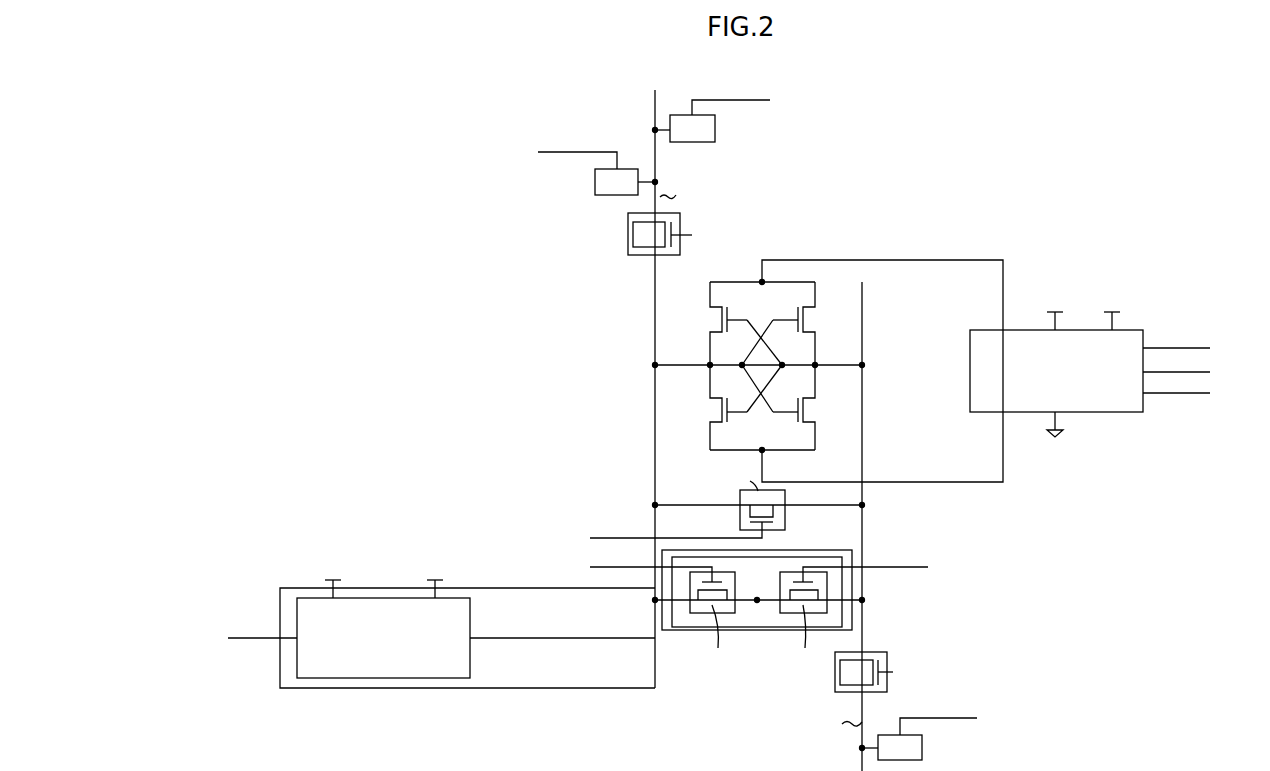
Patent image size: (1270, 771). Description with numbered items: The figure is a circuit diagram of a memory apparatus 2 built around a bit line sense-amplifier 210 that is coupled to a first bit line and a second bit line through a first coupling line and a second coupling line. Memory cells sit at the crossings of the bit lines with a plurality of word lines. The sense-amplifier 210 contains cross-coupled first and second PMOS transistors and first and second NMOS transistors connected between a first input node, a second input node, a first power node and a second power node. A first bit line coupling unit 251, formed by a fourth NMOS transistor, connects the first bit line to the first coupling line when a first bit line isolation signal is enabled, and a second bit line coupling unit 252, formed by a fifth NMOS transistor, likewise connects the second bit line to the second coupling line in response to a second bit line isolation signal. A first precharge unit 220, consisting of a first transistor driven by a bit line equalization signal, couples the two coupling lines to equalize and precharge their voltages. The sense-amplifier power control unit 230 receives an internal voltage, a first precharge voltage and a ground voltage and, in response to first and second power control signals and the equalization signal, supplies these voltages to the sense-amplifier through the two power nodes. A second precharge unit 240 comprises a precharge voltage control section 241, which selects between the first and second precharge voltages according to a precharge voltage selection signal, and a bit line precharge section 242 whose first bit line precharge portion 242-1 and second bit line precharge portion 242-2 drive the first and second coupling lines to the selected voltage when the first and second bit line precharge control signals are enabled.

The memory apparatus 2 is at (466, 226).
The bit line sense-amplifier 210 is at (805, 281).
The first precharge unit 220 is at (788, 516).
The sense-amplifier power control unit 230 is at (1143, 331).
The second precharge unit 240 is at (853, 583).
The precharge voltage control section 241 is at (472, 663).
The bit line precharge section 242 is at (748, 630).
The first bit line precharge portion 242-1 is at (700, 613).
The second bit line precharge portion 242-2 is at (788, 613).
The first bit line coupling unit 251 is at (628, 235).
The second bit line coupling unit 252 is at (875, 653).